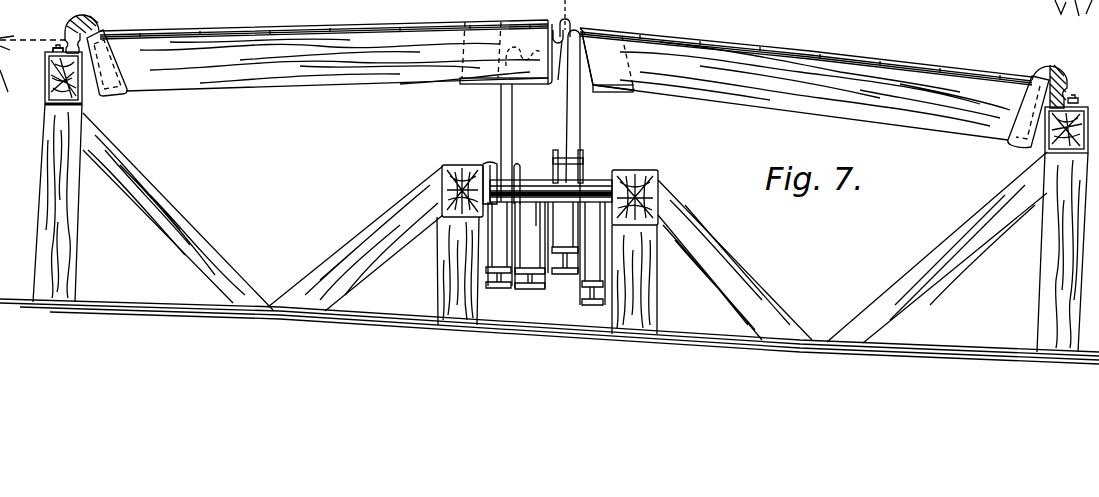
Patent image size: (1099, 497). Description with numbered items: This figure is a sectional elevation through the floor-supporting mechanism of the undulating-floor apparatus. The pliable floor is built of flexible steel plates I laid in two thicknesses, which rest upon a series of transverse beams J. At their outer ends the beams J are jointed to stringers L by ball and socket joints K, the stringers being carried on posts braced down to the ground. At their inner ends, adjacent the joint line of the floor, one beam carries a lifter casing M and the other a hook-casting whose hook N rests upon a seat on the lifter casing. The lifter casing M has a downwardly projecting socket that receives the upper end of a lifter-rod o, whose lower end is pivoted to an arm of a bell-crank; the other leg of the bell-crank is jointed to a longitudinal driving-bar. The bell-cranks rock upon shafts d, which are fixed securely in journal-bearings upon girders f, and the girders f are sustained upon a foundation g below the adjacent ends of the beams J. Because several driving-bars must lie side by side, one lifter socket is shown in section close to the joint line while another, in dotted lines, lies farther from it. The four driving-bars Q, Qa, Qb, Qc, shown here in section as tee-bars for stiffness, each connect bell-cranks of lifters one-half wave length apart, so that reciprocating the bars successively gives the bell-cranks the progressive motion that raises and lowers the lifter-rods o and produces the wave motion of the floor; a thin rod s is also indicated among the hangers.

The foundation g is at (696, 334).
The stringer L is at (83, 100).
The transverse beam J is at (260, 90).
The outer floor-plate I is at (235, 28).
The ball and socket joint K is at (87, 32).
The hook N is at (557, 25).
The lifter casing M is at (632, 38).
The lifter-rod o is at (500, 138).
The shaft d is at (598, 191).
The girder f is at (443, 172).
The driving-bar Q is at (500, 289).
The driving-bar Qa is at (532, 290).
The driving-bar Qb is at (563, 275).
The driving-bar Qc is at (590, 305).
The rod s is at (533, 224).